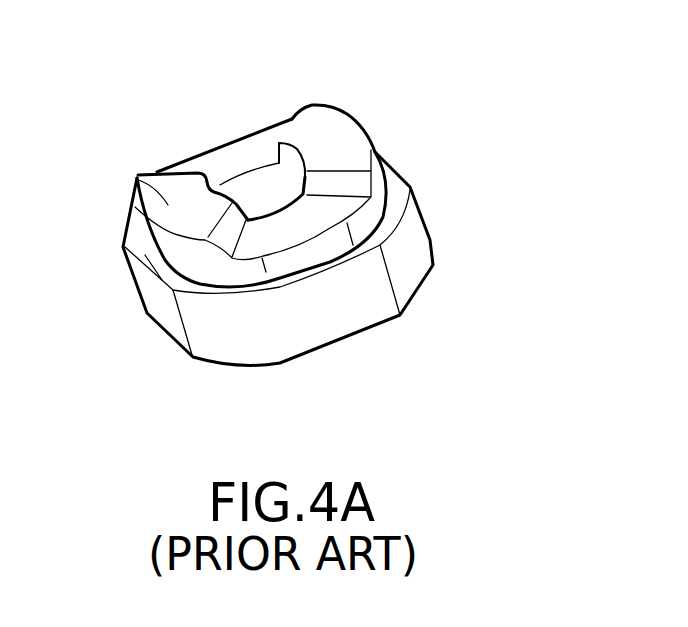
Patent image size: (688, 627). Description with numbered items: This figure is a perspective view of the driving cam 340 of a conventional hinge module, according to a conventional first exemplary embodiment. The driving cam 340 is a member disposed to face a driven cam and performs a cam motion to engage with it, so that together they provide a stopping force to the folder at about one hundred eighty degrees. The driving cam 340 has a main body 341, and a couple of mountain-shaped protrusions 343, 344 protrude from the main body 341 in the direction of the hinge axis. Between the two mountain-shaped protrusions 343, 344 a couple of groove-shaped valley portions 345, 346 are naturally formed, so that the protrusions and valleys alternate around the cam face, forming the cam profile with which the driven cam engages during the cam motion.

The driving cam 340 is at (419, 165).
The main body 341 is at (411, 260).
The mountain-shaped protrusion 343 is at (140, 188).
The mountain-shaped protrusion 344 is at (347, 133).
The groove-shaped valley portion 345 is at (283, 240).
The groove-shaped valley portion 346 is at (227, 160).